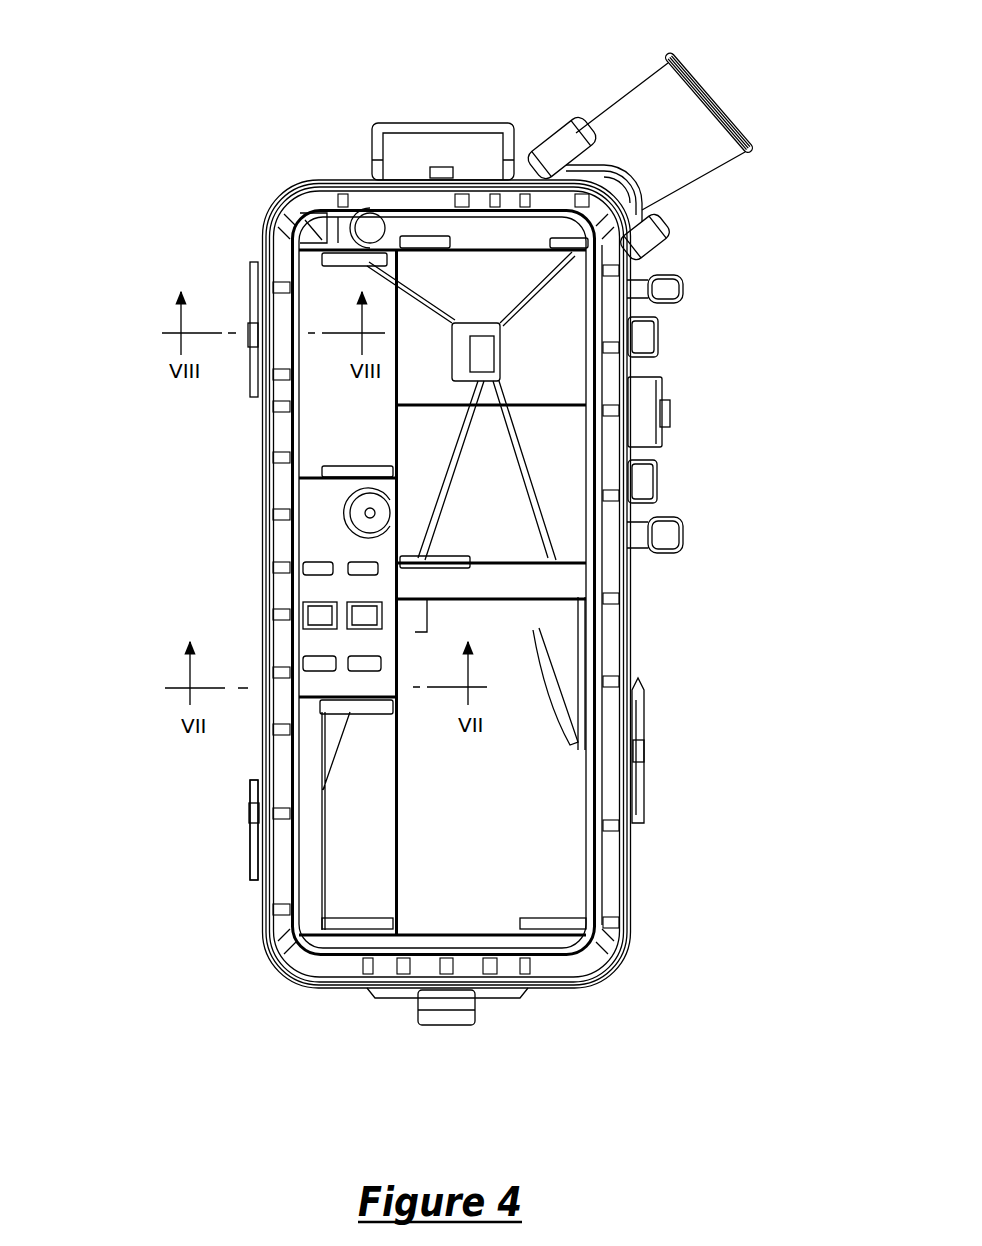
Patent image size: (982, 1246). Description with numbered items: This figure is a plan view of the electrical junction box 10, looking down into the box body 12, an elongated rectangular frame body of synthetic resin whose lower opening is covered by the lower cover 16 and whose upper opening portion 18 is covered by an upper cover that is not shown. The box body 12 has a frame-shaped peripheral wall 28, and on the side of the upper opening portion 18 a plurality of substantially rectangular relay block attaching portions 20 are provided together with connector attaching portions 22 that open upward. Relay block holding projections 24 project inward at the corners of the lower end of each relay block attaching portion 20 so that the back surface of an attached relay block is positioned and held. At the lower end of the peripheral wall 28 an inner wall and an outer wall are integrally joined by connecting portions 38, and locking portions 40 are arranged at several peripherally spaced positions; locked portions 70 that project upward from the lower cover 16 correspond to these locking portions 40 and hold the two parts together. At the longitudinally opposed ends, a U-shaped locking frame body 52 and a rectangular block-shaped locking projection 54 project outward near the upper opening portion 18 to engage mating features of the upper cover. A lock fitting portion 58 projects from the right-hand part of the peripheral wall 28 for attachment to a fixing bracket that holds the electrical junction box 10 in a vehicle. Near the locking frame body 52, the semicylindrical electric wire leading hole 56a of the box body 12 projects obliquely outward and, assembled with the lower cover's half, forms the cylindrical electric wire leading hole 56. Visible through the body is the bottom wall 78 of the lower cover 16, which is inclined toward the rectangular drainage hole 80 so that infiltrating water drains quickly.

The electrical junction box 10 is at (447, 52).
The box body 12 is at (519, 96).
The lower cover 16 is at (498, 848).
The upper opening portion 18 is at (264, 183).
The relay block attaching portion 20 is at (390, 432).
The connector attaching portion 22 is at (362, 550).
The relay block holding projection 24 is at (425, 245).
The peripheral wall 28 is at (265, 228).
The connecting portion 38 is at (282, 335).
The locking portion 40 is at (402, 156).
The locking frame body 52 is at (445, 130).
The locking projection 54 is at (443, 1007).
The electric wire leading hole 56 is at (711, 47).
The electric wire leading hole 56a is at (683, 133).
The lock fitting portion 58 is at (704, 368).
The locked portion 70 is at (507, 1013).
The bottom wall 78 is at (528, 452).
The drainage hole 80 is at (494, 362).